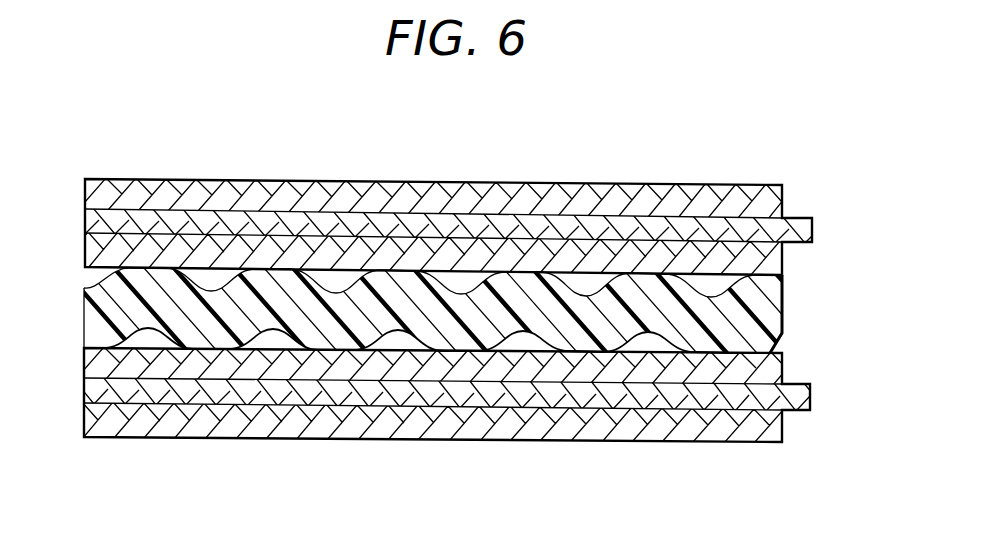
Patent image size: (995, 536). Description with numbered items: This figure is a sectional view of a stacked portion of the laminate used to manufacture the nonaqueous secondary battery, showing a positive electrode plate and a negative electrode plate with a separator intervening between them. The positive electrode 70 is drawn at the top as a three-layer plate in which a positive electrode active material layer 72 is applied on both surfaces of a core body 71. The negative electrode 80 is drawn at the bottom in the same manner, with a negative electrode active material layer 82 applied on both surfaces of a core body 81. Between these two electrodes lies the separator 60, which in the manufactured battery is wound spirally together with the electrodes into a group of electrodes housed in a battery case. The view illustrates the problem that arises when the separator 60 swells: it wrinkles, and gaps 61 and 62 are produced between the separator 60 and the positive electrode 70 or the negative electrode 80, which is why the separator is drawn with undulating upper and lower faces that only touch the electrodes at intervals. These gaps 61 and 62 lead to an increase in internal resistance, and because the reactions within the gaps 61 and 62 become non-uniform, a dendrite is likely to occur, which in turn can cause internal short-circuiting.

The separator 60 is at (468, 306).
The gap 61 is at (345, 280).
The gap 62 is at (524, 345).
The positive electrode 70 is at (83, 181).
The core body 71 is at (815, 227).
The positive electrode active material layer 72 is at (785, 191).
The negative electrode 80 is at (83, 350).
The core body 81 is at (813, 396).
The negative electrode active material layer 82 is at (785, 362).